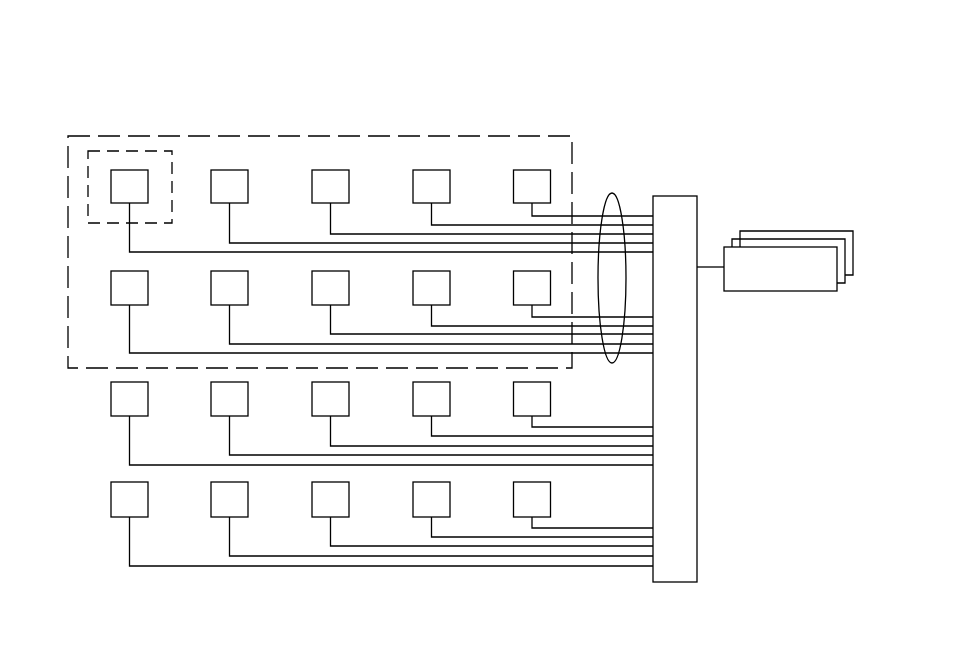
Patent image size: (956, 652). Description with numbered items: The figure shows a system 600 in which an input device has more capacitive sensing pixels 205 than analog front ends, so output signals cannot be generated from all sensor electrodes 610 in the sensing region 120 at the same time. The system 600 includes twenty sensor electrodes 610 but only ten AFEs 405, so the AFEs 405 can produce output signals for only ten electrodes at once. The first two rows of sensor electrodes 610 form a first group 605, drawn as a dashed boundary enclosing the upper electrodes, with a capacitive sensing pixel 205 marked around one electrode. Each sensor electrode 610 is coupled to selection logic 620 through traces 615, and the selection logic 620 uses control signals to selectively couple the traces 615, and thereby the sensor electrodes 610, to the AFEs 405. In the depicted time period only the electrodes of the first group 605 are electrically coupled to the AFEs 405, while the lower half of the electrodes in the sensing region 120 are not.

The system 600 is at (742, 52).
The sensing region 120 is at (102, 457).
The first group 605 is at (123, 135).
The capacitive sensing pixel 205 is at (150, 150).
The sensor electrode 610 is at (248, 183).
The traces 615 is at (612, 193).
The selection logic 620 is at (697, 543).
The AFE 405 is at (823, 282).